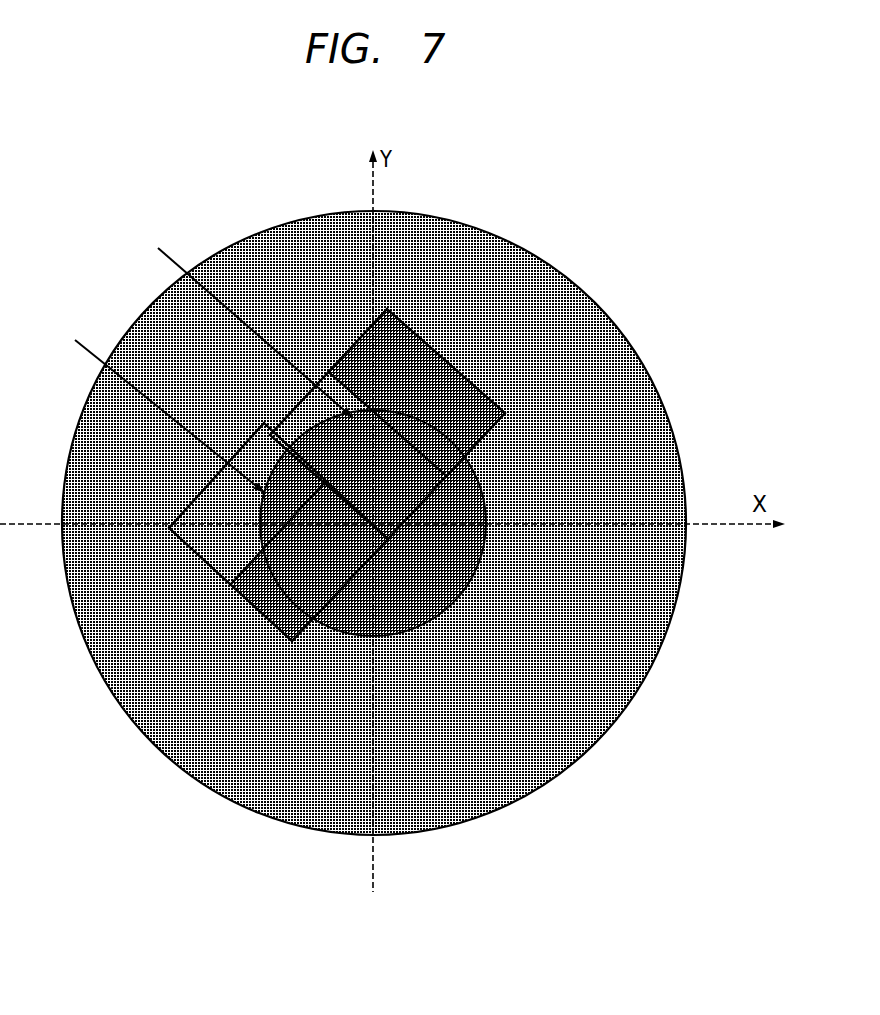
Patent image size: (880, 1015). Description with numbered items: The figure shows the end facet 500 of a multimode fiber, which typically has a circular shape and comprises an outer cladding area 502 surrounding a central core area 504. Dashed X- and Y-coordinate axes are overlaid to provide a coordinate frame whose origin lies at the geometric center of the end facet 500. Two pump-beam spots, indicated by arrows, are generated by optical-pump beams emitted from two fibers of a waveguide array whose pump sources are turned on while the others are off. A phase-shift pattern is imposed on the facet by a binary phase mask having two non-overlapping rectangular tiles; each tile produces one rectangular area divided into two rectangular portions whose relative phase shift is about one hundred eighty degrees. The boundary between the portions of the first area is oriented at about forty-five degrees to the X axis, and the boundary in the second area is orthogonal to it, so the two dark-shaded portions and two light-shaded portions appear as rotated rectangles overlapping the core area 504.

The end facet 500 is at (600, 153).
The cladding area 502 is at (557, 302).
The core area 504 is at (473, 507).